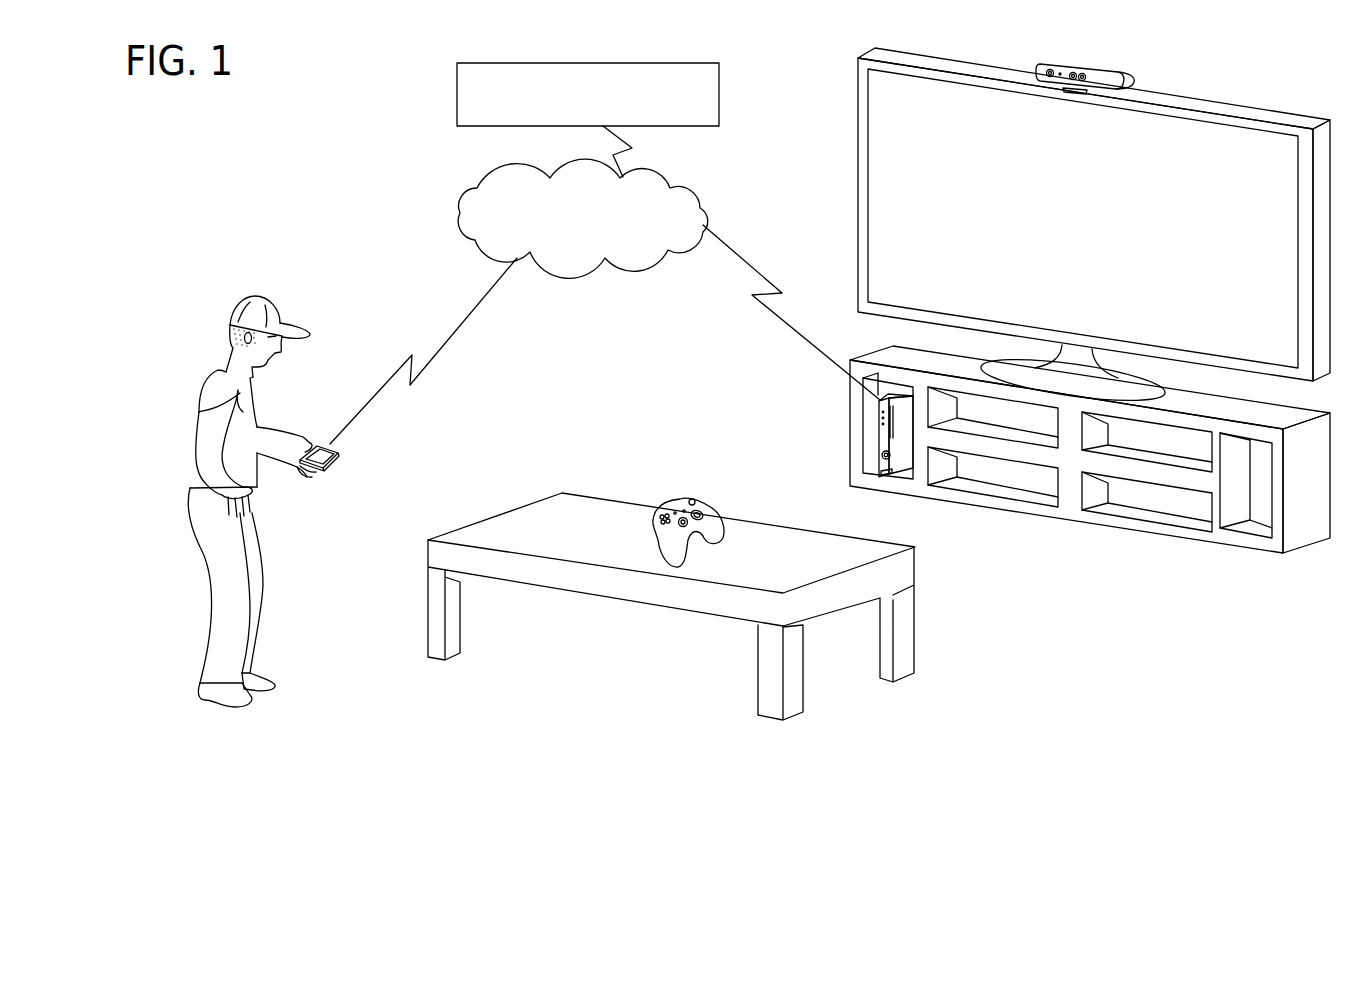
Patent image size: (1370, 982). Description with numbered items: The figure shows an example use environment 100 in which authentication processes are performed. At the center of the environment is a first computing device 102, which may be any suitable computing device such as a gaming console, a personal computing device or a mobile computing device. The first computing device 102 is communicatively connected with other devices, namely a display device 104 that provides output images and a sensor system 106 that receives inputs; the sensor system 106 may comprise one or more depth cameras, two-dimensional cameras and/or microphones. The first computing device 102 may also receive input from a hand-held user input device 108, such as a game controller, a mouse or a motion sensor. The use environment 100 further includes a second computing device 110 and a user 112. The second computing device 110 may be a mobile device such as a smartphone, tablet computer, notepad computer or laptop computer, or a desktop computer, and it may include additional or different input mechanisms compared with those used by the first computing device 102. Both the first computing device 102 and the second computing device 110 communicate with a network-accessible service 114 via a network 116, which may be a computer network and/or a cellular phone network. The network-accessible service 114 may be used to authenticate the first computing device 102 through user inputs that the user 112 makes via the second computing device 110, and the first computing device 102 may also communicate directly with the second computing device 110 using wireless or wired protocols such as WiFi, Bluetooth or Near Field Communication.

The use environment 100 is at (365, 78).
The first computing device 102 is at (892, 484).
The display device 104 is at (1260, 72).
The sensor system 106 is at (1088, 68).
The hand-held user input device 108 is at (707, 503).
The second computing device 110 is at (338, 455).
The user 112 is at (218, 370).
The network-accessible service 114 is at (588, 94).
The network 116 is at (583, 218).